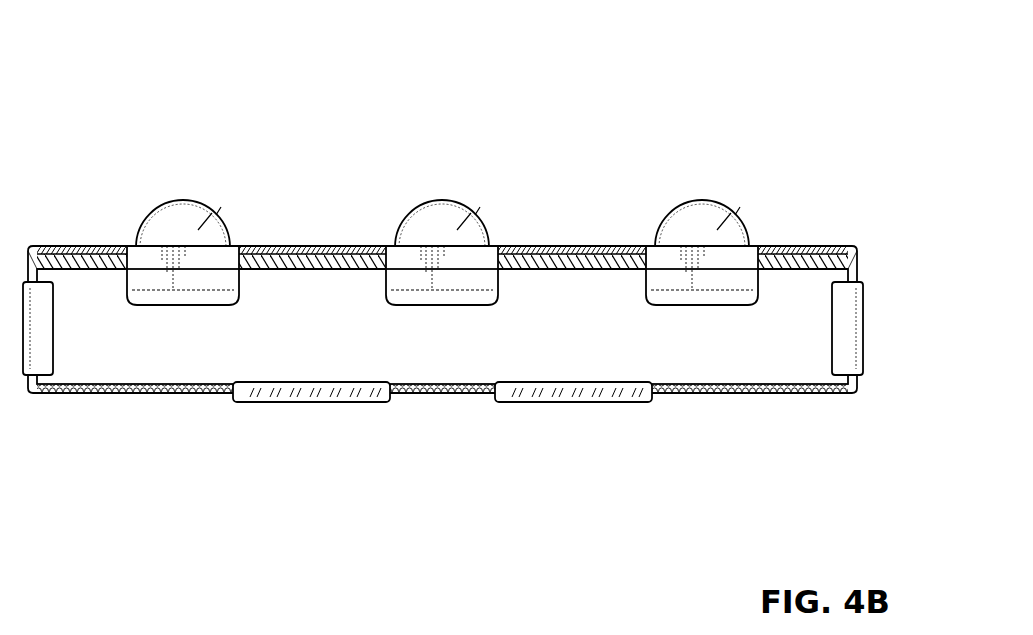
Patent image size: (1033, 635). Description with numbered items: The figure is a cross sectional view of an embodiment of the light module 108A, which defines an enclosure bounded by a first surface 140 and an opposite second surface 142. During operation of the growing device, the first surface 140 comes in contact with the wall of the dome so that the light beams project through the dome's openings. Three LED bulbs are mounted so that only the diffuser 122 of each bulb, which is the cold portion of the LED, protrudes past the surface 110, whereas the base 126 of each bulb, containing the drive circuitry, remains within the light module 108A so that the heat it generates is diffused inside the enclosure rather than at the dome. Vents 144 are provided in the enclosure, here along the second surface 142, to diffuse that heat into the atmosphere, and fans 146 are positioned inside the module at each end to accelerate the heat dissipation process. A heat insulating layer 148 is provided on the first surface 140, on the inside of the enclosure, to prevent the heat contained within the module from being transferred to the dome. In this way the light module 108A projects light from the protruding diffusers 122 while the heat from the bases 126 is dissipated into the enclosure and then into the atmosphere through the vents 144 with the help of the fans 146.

The light module 108A is at (869, 267).
The surface 110 is at (658, 176).
The diffuser 122 is at (164, 200).
The base 126 is at (143, 305).
The first surface 140 is at (298, 246).
The second surface 142 is at (446, 392).
The vents 144 is at (277, 402).
The fans 146 is at (25, 306).
The heat insulating layer 148 is at (293, 269).